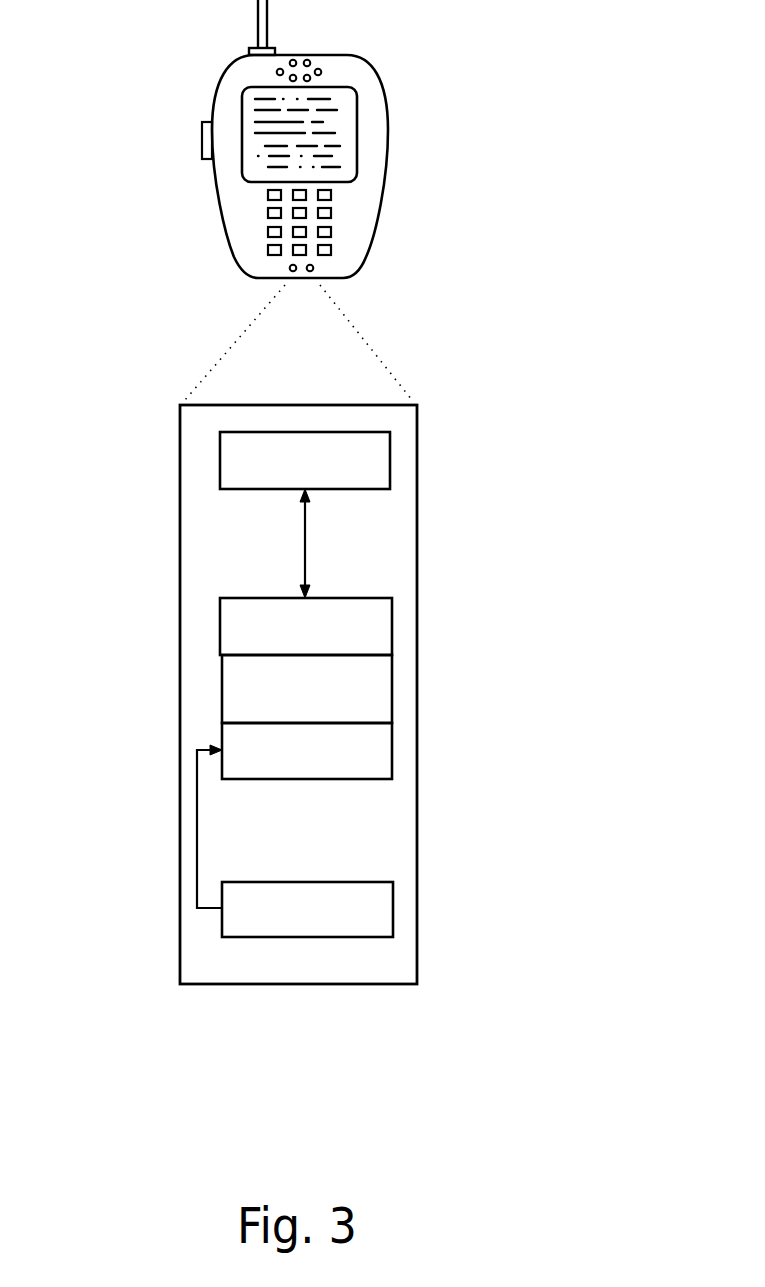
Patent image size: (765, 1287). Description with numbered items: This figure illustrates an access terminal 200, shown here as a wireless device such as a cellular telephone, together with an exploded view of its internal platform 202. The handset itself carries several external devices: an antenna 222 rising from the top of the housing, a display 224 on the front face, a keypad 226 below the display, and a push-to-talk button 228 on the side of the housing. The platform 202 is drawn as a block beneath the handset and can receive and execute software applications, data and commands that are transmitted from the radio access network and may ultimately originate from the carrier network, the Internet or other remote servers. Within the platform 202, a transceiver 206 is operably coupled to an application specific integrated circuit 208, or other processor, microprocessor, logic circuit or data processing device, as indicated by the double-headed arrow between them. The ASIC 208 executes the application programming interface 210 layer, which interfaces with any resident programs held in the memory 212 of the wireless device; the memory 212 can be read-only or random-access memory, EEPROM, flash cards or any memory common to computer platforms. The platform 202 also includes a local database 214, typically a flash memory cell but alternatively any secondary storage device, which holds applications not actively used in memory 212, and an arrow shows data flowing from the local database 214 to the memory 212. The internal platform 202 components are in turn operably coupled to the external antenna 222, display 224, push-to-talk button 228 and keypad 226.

The access terminal 200 is at (366, 257).
The platform 202 is at (180, 602).
The transceiver 206 is at (390, 462).
The application specific integrated circuit 208 is at (392, 635).
The application programming interface 210 is at (392, 683).
The memory 212 is at (392, 750).
The local database 214 is at (393, 891).
The antenna 222 is at (320, 0).
The display 224 is at (357, 120).
The keypad 226 is at (331, 213).
The push-to-talk button 228 is at (202, 132).